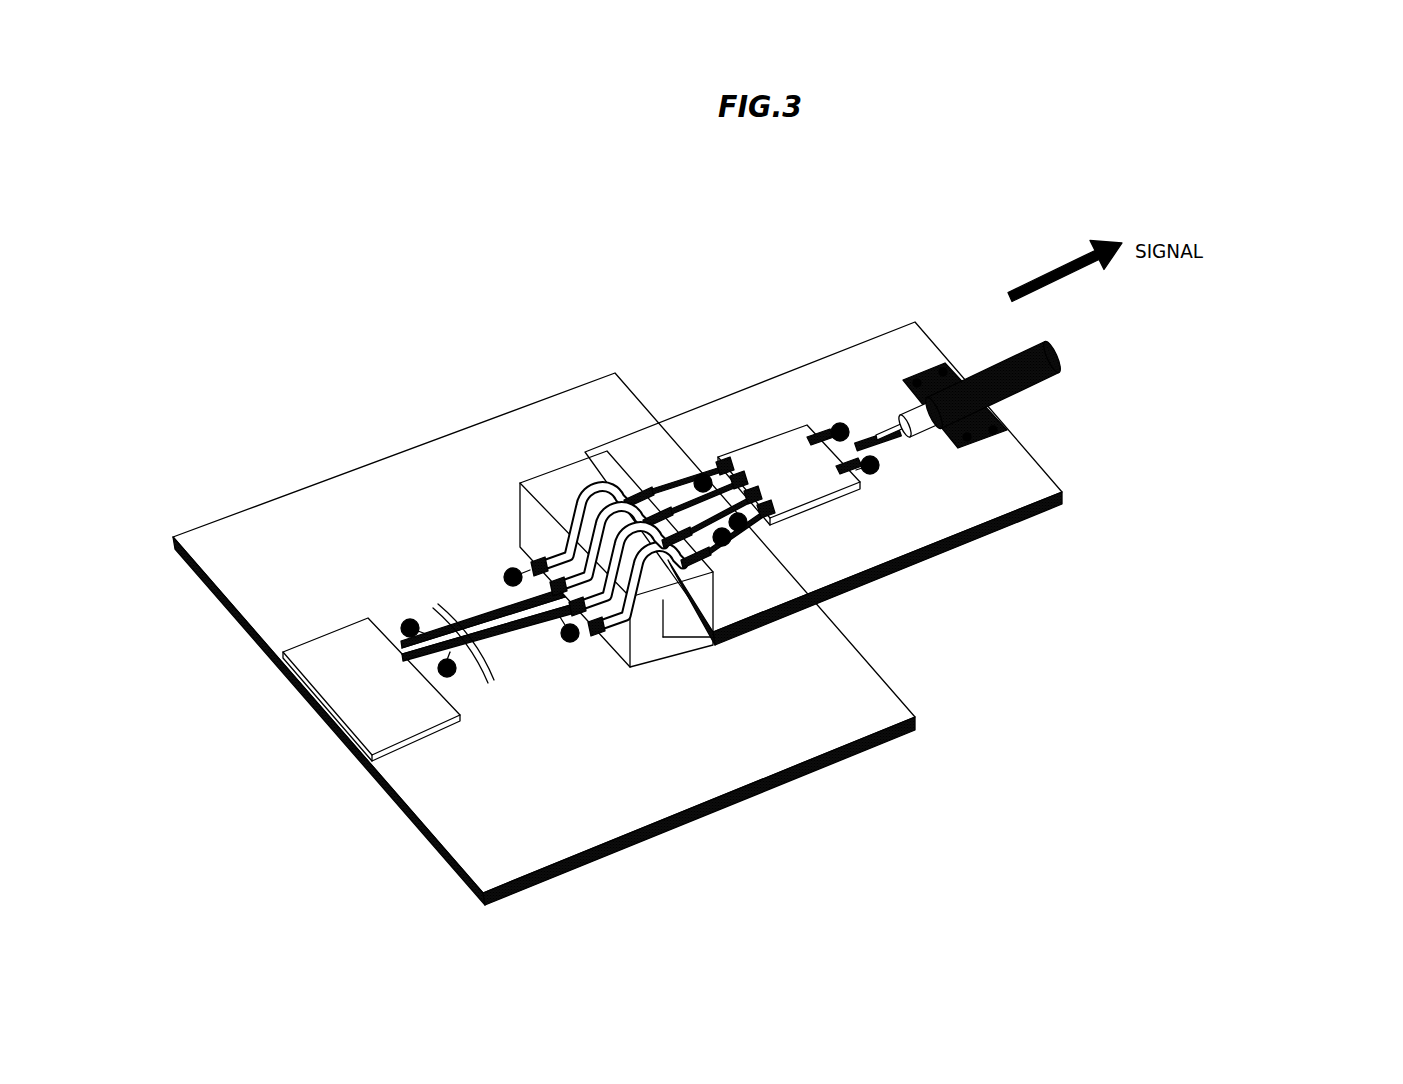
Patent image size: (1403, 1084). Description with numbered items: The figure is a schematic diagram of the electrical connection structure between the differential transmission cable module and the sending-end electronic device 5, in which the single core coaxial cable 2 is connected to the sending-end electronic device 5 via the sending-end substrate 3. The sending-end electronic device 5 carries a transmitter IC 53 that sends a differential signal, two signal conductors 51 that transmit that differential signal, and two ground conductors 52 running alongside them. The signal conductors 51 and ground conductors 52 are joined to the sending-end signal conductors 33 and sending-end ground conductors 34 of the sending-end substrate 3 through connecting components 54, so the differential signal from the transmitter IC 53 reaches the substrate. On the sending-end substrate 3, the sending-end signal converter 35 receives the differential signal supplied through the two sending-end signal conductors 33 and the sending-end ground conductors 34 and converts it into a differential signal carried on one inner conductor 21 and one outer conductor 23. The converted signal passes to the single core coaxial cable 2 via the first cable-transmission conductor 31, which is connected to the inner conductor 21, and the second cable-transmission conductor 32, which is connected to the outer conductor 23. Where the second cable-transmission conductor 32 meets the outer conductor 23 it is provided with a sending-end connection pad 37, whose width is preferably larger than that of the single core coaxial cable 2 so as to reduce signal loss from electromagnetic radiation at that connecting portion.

The single core coaxial cable 2 is at (1109, 391).
The sending-end substrate 3 is at (845, 345).
The sending-end electronic device 5 is at (460, 408).
The inner conductor 21 is at (1007, 444).
The outer conductor 23 is at (1050, 380).
The first cable-transmission conductor 31 is at (882, 442).
The second cable-transmission conductor 32 is at (877, 466).
The sending-end signal conductor 33 is at (697, 535).
The sending-end ground conductor 34 is at (680, 557).
The sending-end signal converter 35 is at (758, 425).
The sending-end connection pad 37 is at (1010, 446).
The signal conductor 51 is at (483, 632).
The ground conductor 52 is at (512, 575).
The transmitter IC 53 is at (372, 695).
The connecting component 54 is at (683, 632).